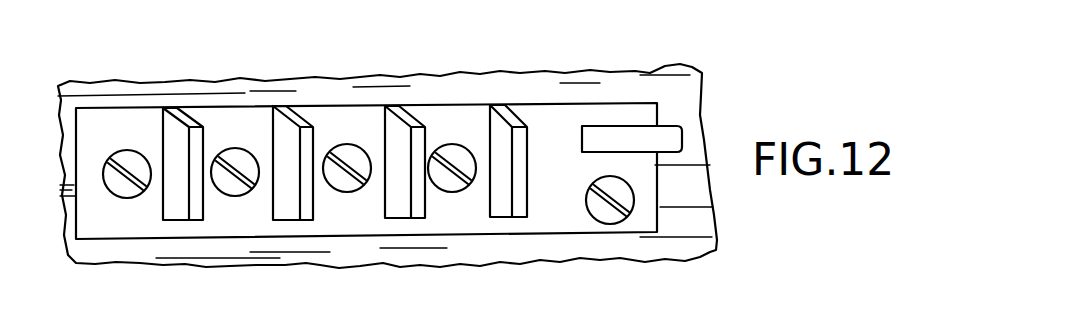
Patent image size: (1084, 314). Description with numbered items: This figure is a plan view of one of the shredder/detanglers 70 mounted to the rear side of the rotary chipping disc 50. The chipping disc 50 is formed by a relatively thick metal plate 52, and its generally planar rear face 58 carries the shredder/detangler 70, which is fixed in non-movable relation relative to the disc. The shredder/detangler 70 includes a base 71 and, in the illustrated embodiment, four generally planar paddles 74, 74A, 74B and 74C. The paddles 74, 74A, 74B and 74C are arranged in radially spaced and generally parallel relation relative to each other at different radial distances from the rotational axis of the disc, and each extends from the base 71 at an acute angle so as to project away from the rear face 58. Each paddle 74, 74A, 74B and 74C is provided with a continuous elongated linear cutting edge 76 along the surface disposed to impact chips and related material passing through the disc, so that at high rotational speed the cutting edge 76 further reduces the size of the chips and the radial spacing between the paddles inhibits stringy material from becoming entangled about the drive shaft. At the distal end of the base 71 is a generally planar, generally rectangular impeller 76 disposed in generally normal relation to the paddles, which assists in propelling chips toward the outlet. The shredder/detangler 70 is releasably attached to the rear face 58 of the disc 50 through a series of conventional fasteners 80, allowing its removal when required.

The chipping disc 50 is at (212, 64).
The metal plate 52 is at (376, 256).
The rear face 58 is at (143, 95).
The shredder/detangler 70 is at (693, 222).
The base 71 is at (465, 113).
The paddle 74 is at (504, 208).
The paddle 74A is at (401, 205).
The paddle 74B is at (290, 208).
The paddle 74C is at (176, 210).
The cutting edge 76 is at (197, 118).
The fasteners 80 is at (125, 187).